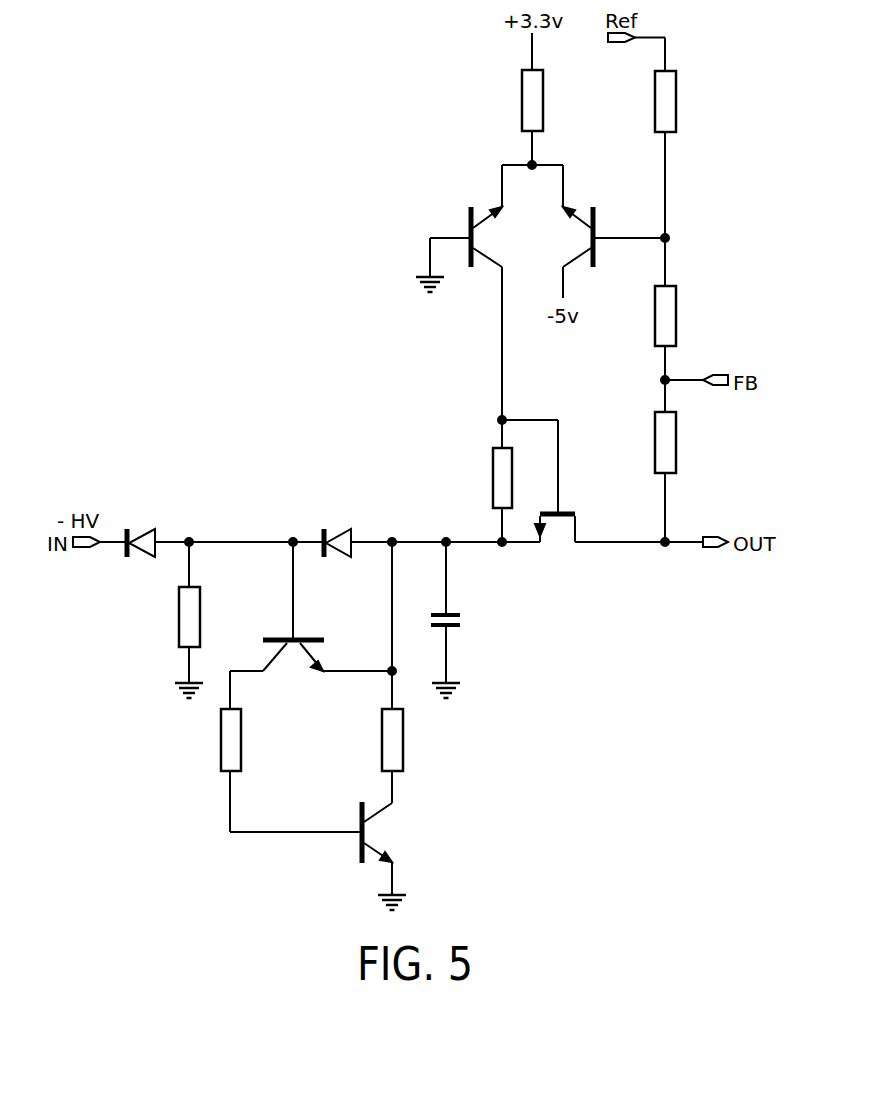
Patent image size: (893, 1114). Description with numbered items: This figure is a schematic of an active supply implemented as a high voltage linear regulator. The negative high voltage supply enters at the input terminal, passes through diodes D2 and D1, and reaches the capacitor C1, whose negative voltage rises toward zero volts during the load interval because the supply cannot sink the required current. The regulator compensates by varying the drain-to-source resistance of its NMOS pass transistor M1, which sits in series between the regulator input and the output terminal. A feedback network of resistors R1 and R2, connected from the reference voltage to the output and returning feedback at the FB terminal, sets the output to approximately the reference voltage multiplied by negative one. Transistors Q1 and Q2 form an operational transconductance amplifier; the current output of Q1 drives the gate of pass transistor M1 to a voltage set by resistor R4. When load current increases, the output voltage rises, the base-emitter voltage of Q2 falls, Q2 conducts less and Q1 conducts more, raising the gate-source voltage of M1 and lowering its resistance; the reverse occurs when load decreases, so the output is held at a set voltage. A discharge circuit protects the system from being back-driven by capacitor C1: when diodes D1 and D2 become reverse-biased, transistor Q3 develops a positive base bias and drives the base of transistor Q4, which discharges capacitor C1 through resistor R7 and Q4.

The diode D2 is at (148, 531).
The diode D1 is at (345, 531).
The transistor Q1 is at (468, 213).
The transistor Q2 is at (597, 213).
The transistor Q3 is at (310, 636).
The transistor Q4 is at (359, 815).
The resistor R1 is at (677, 100).
The resistor R2 is at (677, 313).
The resistor R4 is at (492, 474).
The resistor R7 is at (381, 745).
The capacitor C1 is at (462, 618).
The NMOS pass transistor M1 is at (565, 511).